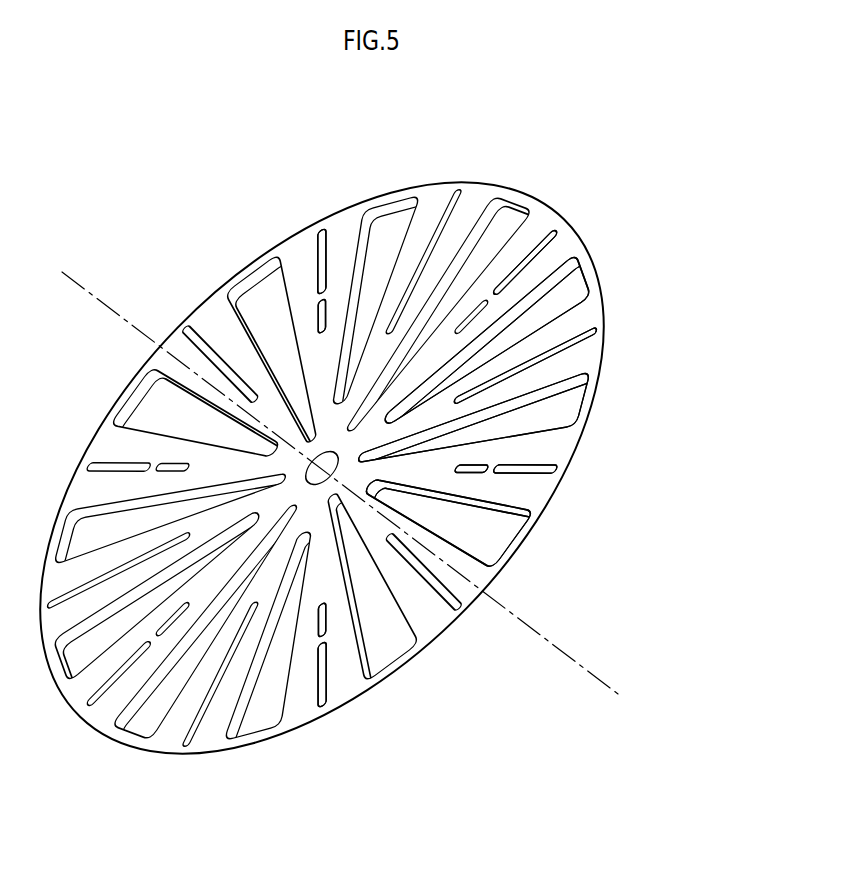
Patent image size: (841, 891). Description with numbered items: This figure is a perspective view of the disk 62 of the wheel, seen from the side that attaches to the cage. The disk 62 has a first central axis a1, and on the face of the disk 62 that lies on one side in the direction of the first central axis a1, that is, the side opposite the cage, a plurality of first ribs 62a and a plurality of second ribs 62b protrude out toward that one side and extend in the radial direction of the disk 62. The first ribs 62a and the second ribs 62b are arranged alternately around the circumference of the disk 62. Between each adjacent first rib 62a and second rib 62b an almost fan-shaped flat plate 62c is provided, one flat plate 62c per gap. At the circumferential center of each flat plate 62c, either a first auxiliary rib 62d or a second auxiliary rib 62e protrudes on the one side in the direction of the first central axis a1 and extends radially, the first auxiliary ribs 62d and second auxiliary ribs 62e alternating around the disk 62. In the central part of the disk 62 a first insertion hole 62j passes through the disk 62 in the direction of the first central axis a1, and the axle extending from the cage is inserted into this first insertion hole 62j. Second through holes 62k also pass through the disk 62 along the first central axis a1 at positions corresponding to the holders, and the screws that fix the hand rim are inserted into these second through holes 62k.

The disk 62 is at (613, 151).
The first ribs 62a is at (577, 403).
The second ribs 62b is at (582, 278).
The flat plates 62c is at (602, 315).
The first auxiliary rib 62d is at (587, 347).
The second auxiliary rib 62e is at (550, 477).
The first insertion hole 62j is at (380, 573).
The second through holes 62k is at (541, 236).
The first central axis a1 is at (110, 297).